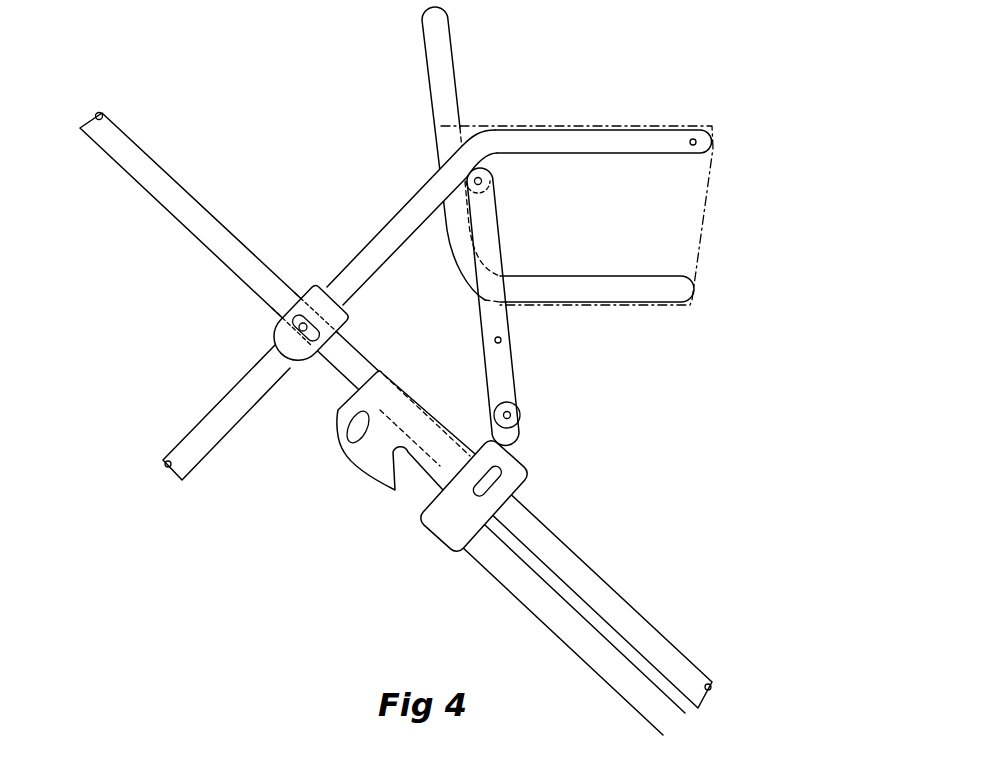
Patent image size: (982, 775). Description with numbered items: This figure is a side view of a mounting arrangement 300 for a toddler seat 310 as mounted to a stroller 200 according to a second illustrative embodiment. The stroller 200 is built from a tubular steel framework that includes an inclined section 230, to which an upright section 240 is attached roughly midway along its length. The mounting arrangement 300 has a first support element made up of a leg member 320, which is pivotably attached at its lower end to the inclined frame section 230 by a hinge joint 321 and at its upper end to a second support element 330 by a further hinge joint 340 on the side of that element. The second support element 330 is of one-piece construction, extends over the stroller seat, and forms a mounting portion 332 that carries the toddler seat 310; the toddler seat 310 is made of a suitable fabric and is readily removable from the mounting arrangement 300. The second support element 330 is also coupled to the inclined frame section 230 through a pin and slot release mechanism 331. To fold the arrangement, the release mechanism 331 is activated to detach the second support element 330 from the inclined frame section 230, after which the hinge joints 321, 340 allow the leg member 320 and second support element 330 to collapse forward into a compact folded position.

The stroller 200 is at (168, 148).
The inclined section 230 is at (185, 213).
The upright section 240 is at (215, 422).
The mounting arrangement 300 is at (550, 112).
The toddler seat 310 is at (705, 217).
The leg member 320 is at (500, 358).
The hinge joint 321 is at (512, 415).
The second support element 330 is at (397, 228).
The pin and slot release mechanism 331 is at (322, 290).
The mounting portion 332 is at (643, 148).
The hinge joint 340 is at (473, 180).